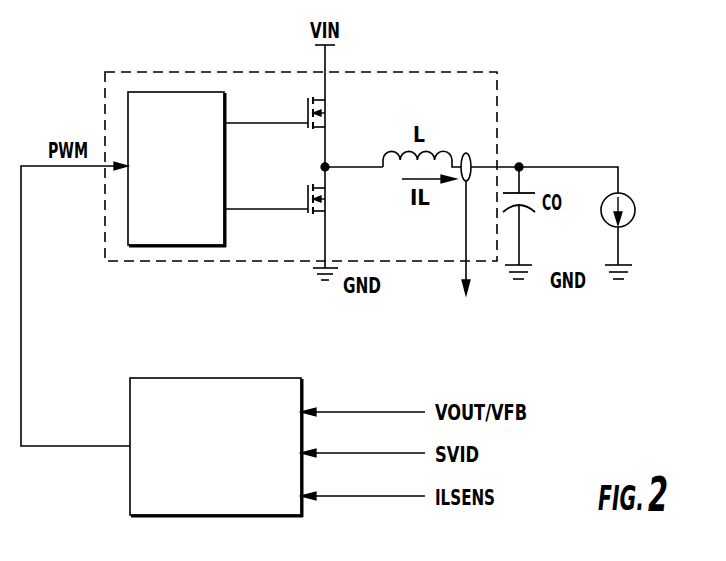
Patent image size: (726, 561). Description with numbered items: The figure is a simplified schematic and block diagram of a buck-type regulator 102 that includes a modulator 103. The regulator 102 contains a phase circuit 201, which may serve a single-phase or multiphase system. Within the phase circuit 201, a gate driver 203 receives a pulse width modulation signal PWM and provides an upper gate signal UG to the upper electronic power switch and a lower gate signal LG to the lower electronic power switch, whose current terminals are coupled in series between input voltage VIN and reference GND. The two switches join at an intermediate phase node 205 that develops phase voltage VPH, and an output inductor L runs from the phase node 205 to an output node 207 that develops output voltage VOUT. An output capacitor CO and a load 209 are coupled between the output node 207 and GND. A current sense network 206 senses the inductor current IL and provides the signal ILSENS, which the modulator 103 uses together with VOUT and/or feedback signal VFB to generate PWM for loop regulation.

The buck-type regulator 102 is at (552, 50).
The modulator 103 is at (232, 472).
The phase circuit 201 is at (405, 243).
The gate driver 203 is at (192, 202).
The phase node 205 is at (321, 167).
The current sense network 206 is at (466, 153).
The output node 207 is at (519, 163).
The load 209 is at (629, 197).